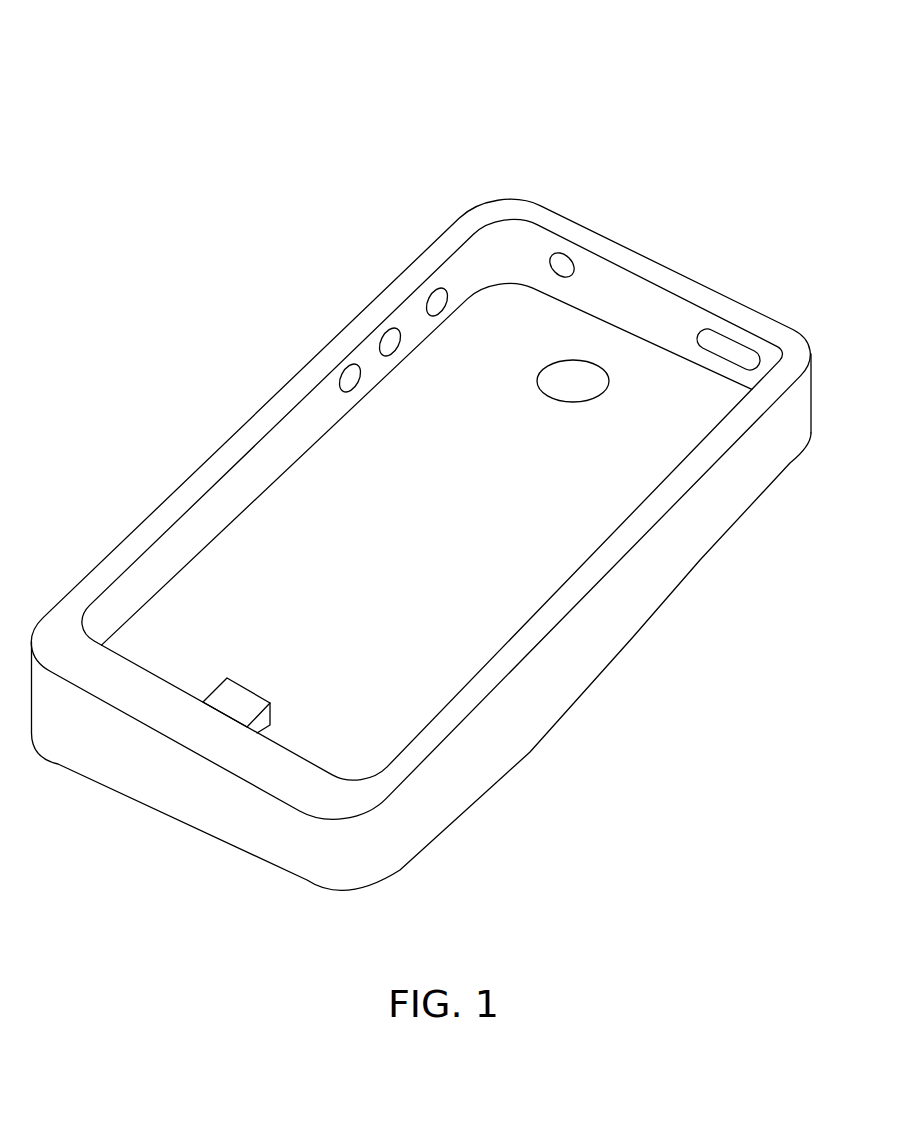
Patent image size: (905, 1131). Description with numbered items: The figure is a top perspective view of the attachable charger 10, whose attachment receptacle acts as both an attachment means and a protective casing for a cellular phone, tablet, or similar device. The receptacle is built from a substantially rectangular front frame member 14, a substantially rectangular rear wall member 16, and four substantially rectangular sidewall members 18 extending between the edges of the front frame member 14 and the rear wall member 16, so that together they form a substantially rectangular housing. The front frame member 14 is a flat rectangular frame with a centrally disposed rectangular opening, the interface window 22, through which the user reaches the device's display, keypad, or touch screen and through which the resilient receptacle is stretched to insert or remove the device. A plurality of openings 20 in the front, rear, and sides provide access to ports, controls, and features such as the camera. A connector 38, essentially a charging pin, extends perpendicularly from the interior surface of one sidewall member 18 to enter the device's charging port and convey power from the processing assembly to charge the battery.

The charger 10 is at (680, 65).
The front frame member 14 is at (723, 312).
The rear wall member 16 is at (503, 323).
The sidewall members 18 is at (582, 636).
The openings 20 is at (350, 370).
The interface window 22 is at (278, 541).
The connector 38 is at (238, 705).